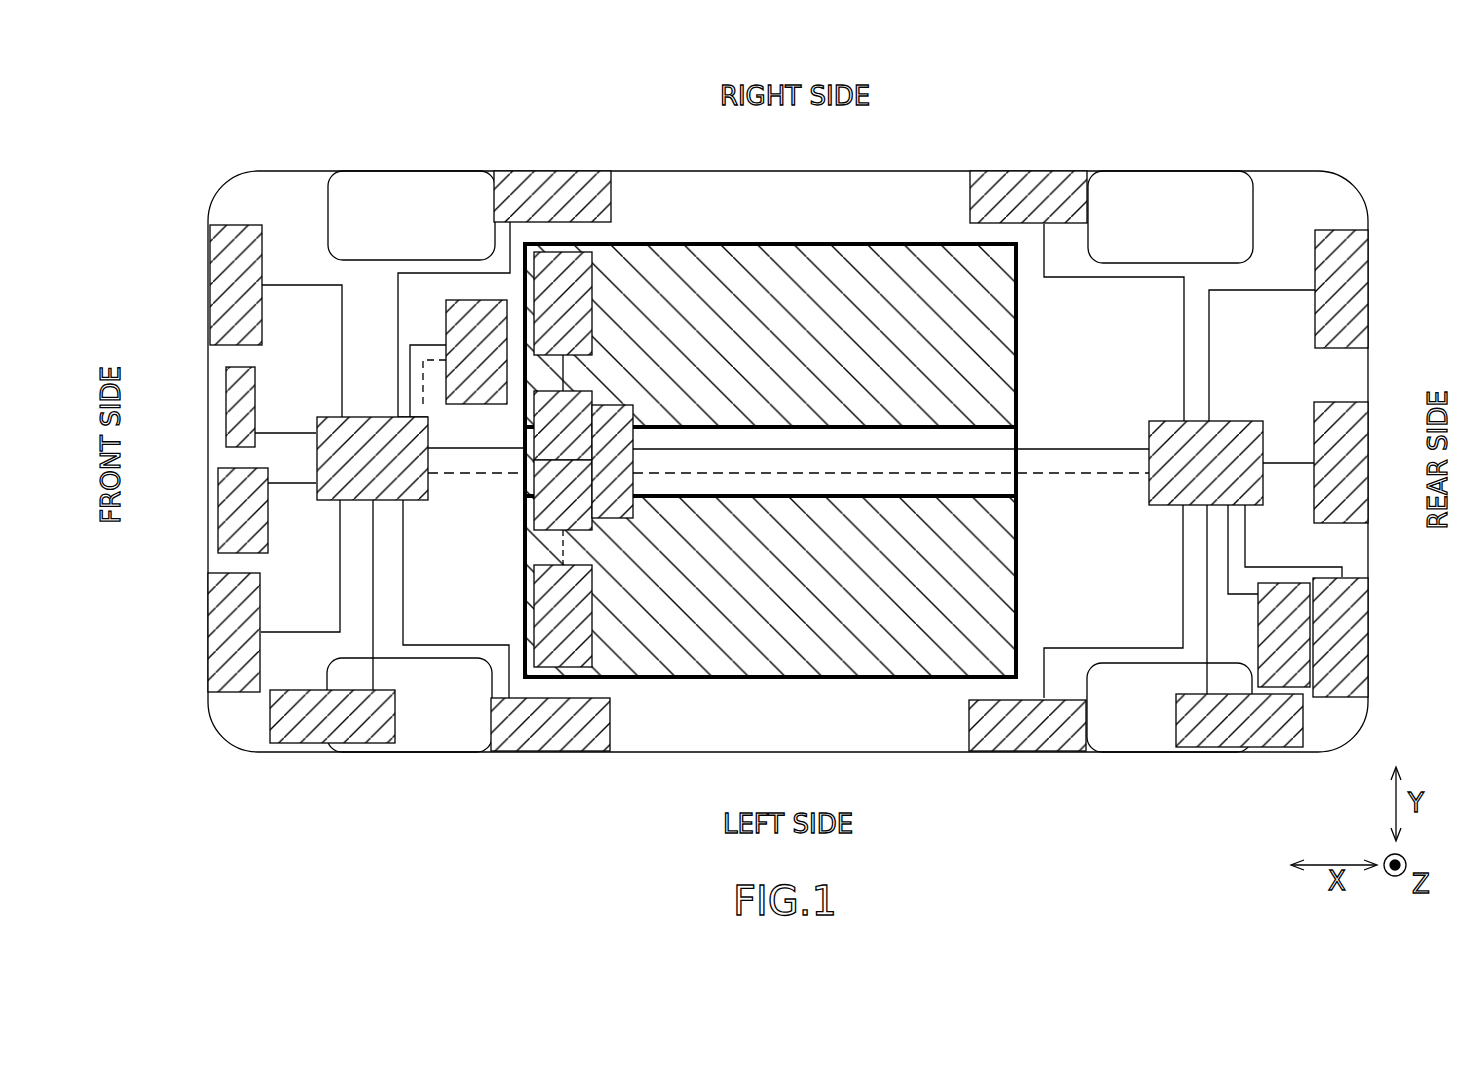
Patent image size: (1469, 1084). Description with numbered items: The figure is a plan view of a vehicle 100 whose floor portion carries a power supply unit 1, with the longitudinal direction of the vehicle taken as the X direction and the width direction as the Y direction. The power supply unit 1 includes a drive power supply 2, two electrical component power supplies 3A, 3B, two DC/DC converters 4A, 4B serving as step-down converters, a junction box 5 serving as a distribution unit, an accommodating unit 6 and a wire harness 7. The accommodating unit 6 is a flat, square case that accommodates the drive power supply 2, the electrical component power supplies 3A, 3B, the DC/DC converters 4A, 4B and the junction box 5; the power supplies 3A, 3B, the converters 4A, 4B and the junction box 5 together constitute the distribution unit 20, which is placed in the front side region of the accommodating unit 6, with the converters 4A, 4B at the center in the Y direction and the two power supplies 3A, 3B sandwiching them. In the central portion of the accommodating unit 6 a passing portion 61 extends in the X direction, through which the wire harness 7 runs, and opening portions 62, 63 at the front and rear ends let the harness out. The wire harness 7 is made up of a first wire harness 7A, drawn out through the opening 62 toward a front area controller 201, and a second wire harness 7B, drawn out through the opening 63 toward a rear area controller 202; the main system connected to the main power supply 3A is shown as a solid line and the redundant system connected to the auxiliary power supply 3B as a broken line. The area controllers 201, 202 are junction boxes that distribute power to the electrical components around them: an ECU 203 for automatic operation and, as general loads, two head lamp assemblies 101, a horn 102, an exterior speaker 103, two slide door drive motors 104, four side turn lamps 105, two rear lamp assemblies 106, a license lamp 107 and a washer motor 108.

The power supply unit 1 is at (775, 240).
The drive power supply 2 is at (873, 260).
The electrical component power supply 3A is at (592, 300).
The electrical component power supply 3B is at (592, 618).
The DC/DC converter 4A is at (592, 398).
The DC/DC converter 4B is at (597, 522).
The junction box 5 is at (633, 485).
The accommodating unit 6 is at (830, 690).
The wire harness 7 is at (946, 445).
The first wire harness 7A is at (492, 448).
The second wire harness 7B is at (1003, 449).
The distribution unit 20 is at (1110, 805).
The passing portion 61 is at (893, 490).
The opening portion 62 is at (525, 478).
The opening portion 63 is at (1018, 490).
The vehicle 100 is at (1355, 184).
The head lamp assembly 101 is at (228, 222).
The horn 102 is at (228, 405).
The exterior speaker 103 is at (222, 500).
The slide door drive motor 104 is at (302, 743).
The side turn lamp 105 is at (585, 170).
The rear lamp assembly 106 is at (1368, 288).
The license lamp 107 is at (1368, 448).
The washer motor 108 is at (1297, 583).
The front area controller 201 is at (417, 500).
The rear area controller 202 is at (1160, 505).
The ECU 203 is at (436, 322).